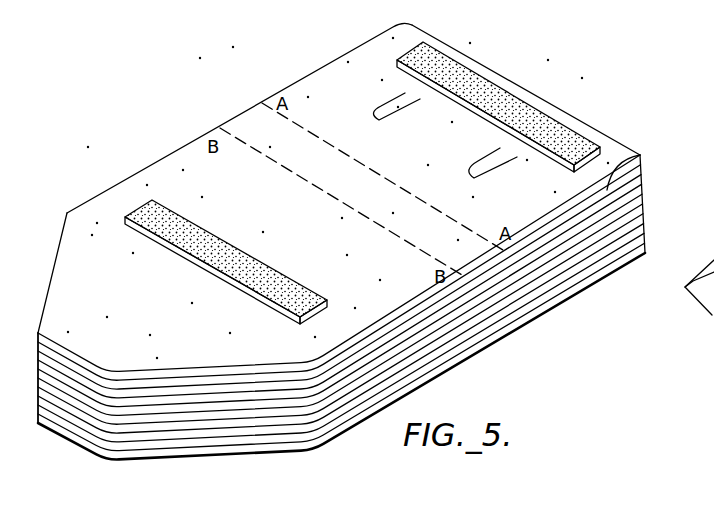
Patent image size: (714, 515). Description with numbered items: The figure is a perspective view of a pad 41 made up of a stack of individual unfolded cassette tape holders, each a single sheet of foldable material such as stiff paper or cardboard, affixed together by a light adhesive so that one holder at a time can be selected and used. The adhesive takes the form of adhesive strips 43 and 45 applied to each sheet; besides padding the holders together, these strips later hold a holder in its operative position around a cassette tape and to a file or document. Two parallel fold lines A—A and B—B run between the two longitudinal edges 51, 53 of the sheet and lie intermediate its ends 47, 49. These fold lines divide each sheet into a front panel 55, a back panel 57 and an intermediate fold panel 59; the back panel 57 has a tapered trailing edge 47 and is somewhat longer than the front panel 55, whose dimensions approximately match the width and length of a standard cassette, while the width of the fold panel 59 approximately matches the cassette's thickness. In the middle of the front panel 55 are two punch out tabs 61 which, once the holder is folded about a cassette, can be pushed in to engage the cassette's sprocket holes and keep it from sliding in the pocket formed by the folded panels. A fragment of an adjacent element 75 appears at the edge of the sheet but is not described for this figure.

The pad 41 is at (152, 70).
The adhesive strip 43 is at (472, 80).
The adhesive strip 45 is at (270, 278).
The tapered trailing edge 47 is at (73, 310).
The end 49 is at (547, 100).
The longitudinal edge 51 is at (642, 155).
The longitudinal edge 53 is at (327, 62).
The front panel 55 is at (338, 90).
The back panel 57 is at (185, 172).
The intermediate fold panel 59 is at (250, 127).
The punch out tabs 61 is at (490, 156).
The adjacent figure element (partial) 75 is at (699, 266).